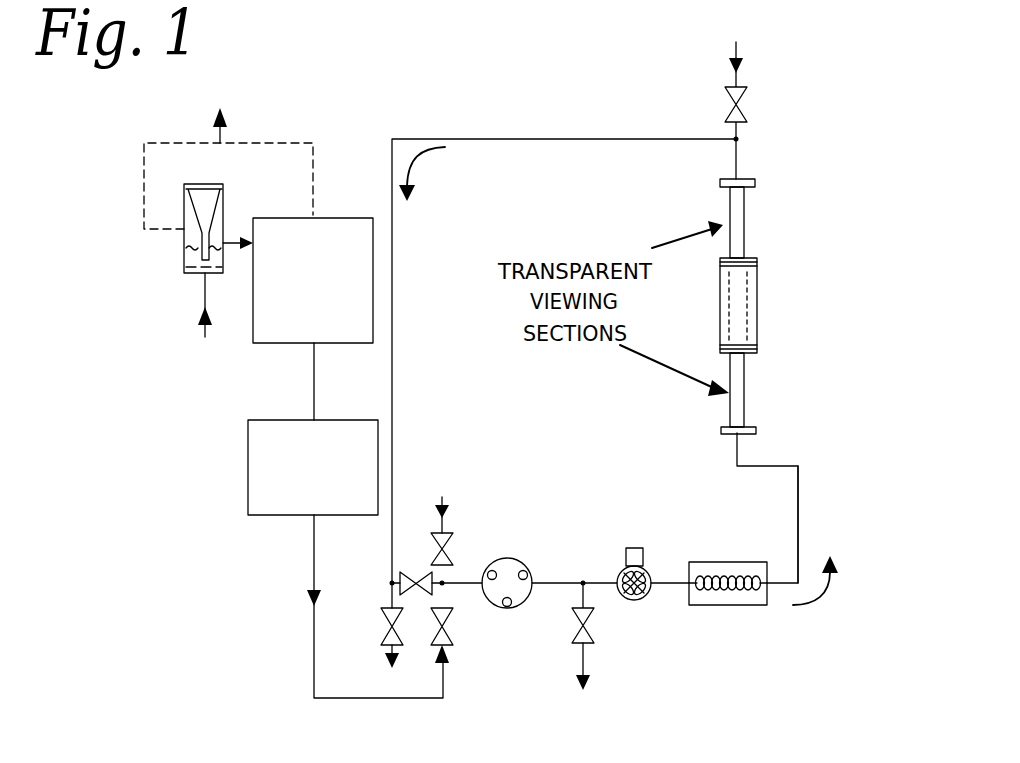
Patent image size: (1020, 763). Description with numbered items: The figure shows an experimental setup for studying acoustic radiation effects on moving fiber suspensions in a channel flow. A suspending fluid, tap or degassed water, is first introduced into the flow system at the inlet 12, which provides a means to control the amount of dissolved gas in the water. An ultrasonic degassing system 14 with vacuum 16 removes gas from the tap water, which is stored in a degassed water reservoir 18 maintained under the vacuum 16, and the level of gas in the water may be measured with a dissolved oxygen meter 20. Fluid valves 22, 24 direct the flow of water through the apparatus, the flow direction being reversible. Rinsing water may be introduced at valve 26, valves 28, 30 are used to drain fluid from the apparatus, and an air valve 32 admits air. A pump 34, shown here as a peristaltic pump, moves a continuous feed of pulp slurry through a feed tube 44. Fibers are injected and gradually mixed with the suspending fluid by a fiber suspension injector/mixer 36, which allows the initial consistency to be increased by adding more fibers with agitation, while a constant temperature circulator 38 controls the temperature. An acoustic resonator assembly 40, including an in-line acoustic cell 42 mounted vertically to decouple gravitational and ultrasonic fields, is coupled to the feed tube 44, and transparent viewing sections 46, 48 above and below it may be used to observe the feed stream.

The suspending fluid inlet 12 is at (204, 337).
The ultrasonic degassing system 14 is at (184, 220).
The vacuum 16 is at (223, 134).
The degassed water reservoir 18 is at (343, 218).
The dissolved oxygen meter 20 is at (345, 420).
The fluid valve 22 is at (447, 643).
The fluid valve 24 is at (392, 583).
The rinsing water valve 26 is at (446, 553).
The drain valve 28 is at (387, 623).
The drain valve 30 is at (590, 643).
The air valve 32 is at (748, 113).
The pump 34 is at (506, 558).
The fiber suspension injector/mixer 36 is at (630, 601).
The constant temperature circulator 38 is at (754, 562).
The acoustic resonator assembly 40 is at (720, 302).
The acoustic cell 42 is at (720, 328).
The feed tube 44 is at (798, 523).
The transparent viewing section 46 is at (748, 377).
The transparent viewing section 48 is at (745, 233).